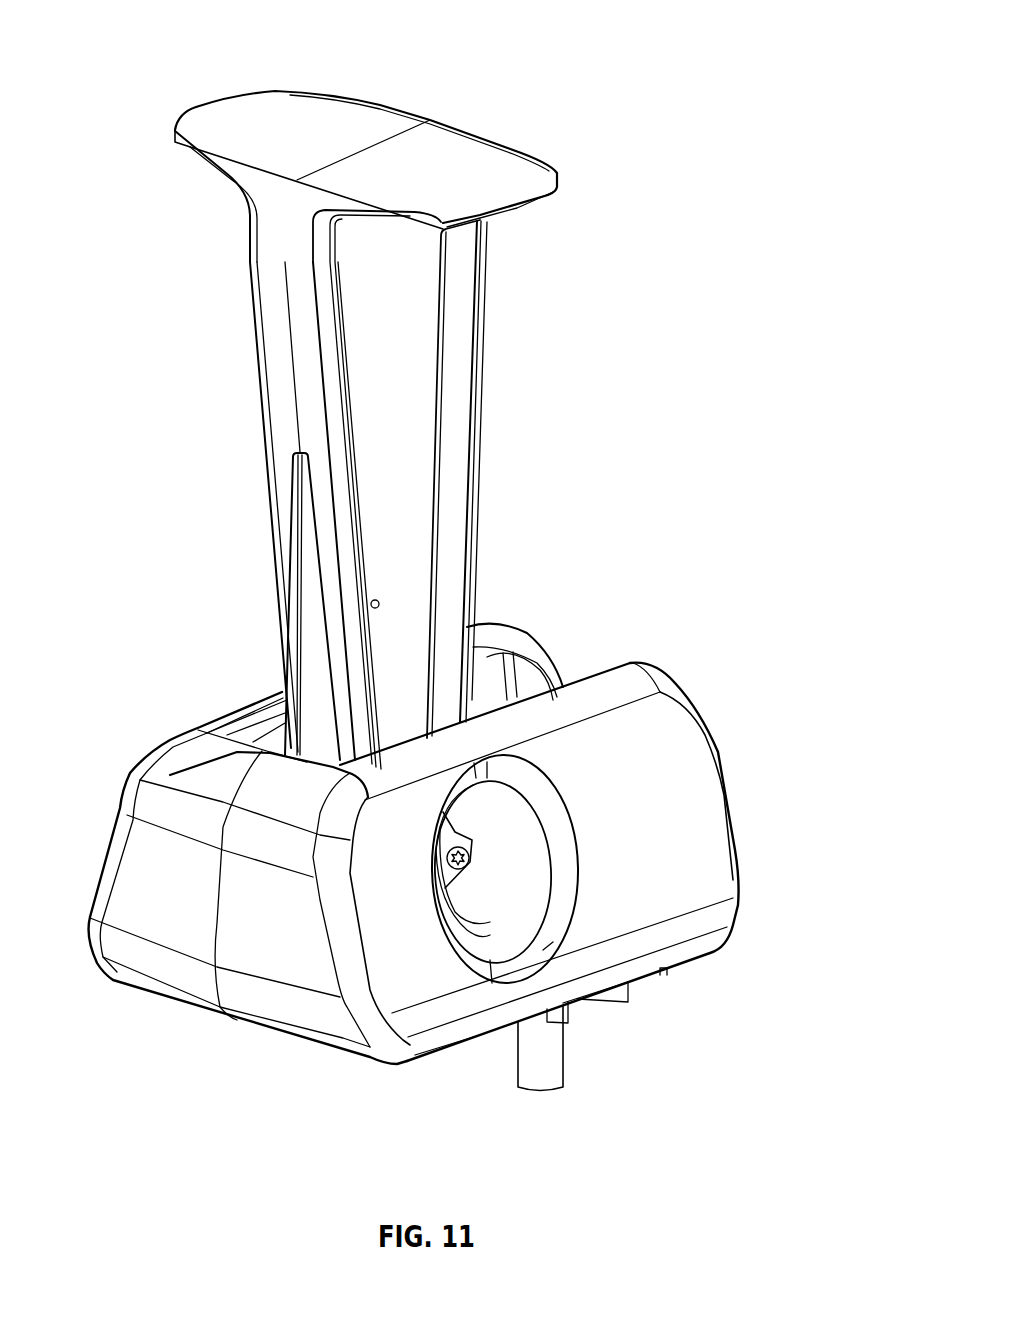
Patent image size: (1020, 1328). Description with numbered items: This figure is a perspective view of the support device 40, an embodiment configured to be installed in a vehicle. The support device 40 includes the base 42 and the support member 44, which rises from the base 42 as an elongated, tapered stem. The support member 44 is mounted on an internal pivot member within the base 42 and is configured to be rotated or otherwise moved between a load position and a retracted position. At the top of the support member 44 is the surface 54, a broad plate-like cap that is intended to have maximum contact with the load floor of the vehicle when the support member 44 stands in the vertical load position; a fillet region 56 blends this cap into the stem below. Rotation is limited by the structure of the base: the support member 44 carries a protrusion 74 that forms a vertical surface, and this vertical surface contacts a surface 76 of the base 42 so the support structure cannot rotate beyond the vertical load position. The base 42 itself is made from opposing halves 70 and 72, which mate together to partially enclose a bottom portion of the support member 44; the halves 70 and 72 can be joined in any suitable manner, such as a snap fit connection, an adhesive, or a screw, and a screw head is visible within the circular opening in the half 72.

The support device 40 is at (661, 34).
The base 42 is at (695, 788).
The support member 44 is at (428, 360).
The surface 54 is at (358, 110).
The fillet 56 is at (250, 182).
The half 70 is at (182, 783).
The half 72 is at (700, 862).
The protrusion 74 is at (317, 655).
The surface 76 is at (253, 743).